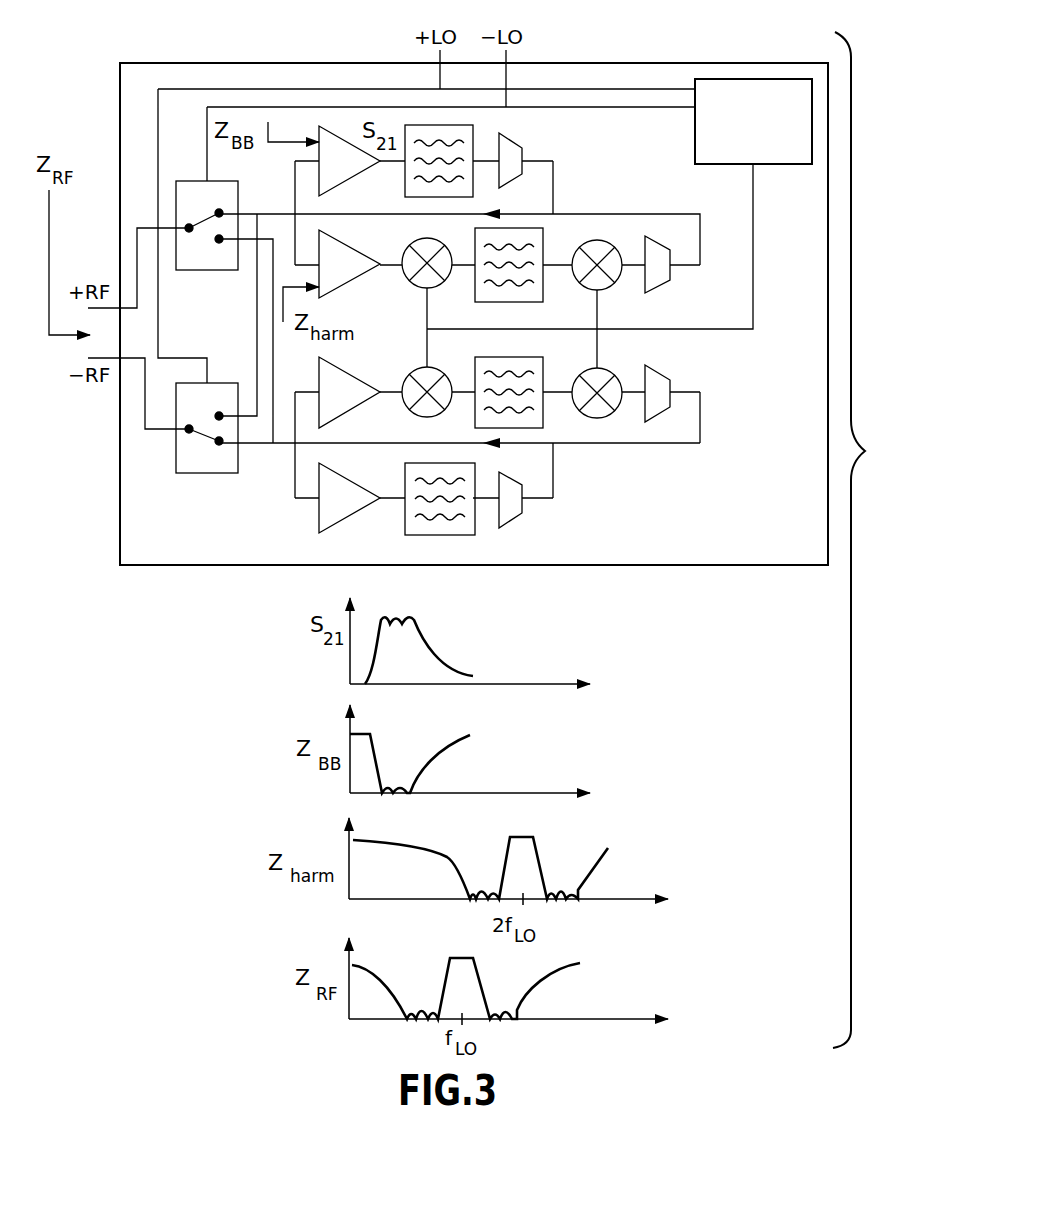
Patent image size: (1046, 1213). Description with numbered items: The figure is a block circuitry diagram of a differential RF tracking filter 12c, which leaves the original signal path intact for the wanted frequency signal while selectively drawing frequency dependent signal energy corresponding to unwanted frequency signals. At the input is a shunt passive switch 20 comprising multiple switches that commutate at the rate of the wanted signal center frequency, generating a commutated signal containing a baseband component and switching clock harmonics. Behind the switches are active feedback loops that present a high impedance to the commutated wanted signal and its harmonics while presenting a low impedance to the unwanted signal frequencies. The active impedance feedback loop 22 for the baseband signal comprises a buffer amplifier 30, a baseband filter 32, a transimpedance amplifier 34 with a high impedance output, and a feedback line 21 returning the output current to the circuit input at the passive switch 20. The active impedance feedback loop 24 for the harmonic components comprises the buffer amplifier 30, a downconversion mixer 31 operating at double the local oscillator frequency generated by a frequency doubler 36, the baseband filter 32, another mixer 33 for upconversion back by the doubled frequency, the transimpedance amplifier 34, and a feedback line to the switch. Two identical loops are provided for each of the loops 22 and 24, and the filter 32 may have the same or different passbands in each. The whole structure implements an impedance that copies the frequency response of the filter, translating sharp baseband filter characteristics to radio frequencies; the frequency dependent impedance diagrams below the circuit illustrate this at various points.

The differential RF tracking filter 12c is at (670, 63).
The passive switch 20 is at (205, 473).
The feedback line 21 is at (520, 443).
The active impedance feedback loop 22 is at (553, 183).
The active impedance feedback loop 24 is at (700, 250).
The buffer amplifier 30 is at (350, 412).
The downconversion mixer 31 is at (418, 372).
The baseband filter 32 is at (543, 418).
The mixer 33 is at (605, 370).
The transimpedance amplifier 34 is at (657, 367).
The frequency doubler 36 is at (765, 164).